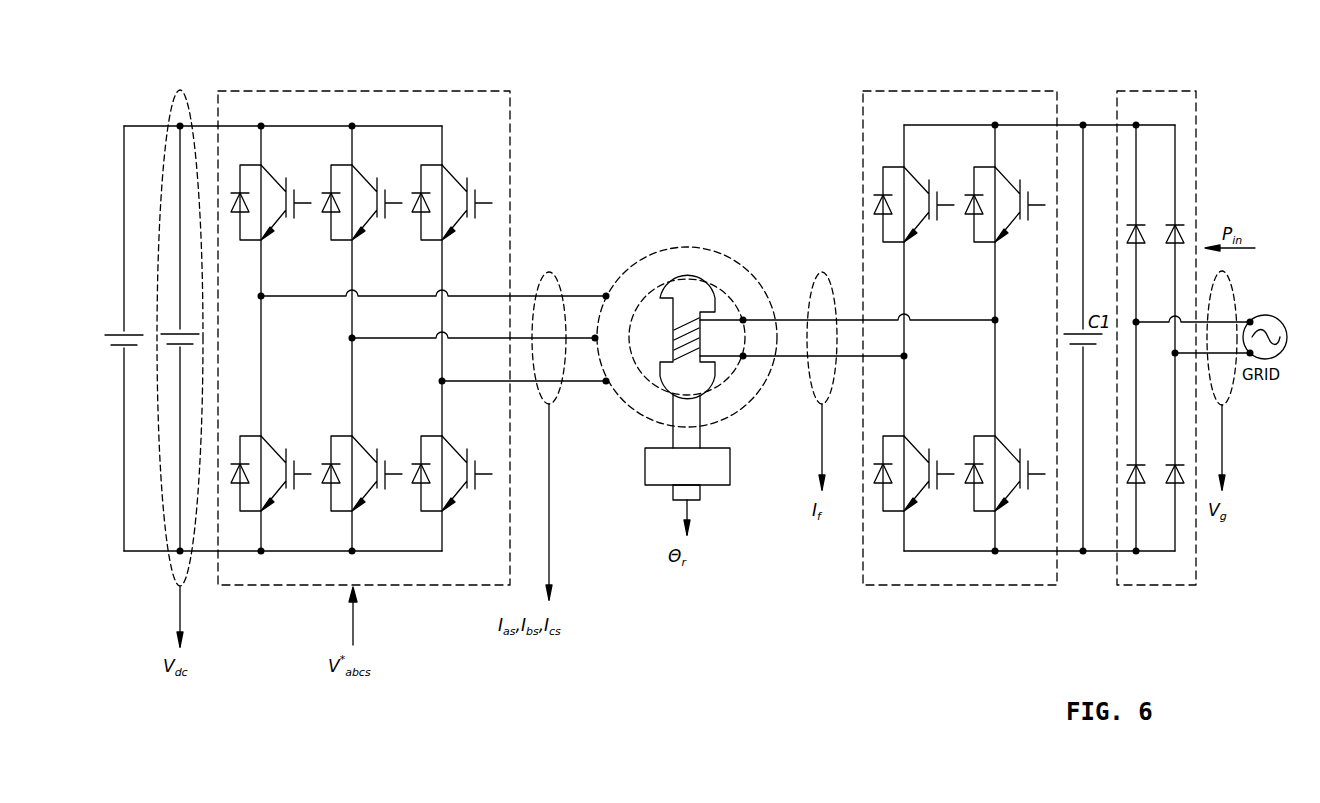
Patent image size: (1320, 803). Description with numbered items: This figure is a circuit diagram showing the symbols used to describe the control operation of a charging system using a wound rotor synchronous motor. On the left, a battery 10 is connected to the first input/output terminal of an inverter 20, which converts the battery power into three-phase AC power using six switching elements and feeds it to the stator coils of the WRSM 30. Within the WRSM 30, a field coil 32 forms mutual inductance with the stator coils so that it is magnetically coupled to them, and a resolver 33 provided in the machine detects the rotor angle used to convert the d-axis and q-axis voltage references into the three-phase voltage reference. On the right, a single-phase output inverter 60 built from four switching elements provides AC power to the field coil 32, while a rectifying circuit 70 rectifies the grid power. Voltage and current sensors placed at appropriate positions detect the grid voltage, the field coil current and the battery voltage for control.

The battery 10 is at (115, 334).
The inverter 20 is at (390, 91).
The WRSM 30 is at (687, 292).
The field coil 32 is at (686, 315).
The resolver 33 is at (718, 485).
The single-phase output inverter 60 is at (958, 91).
The rectifying circuit 70 is at (1152, 91).